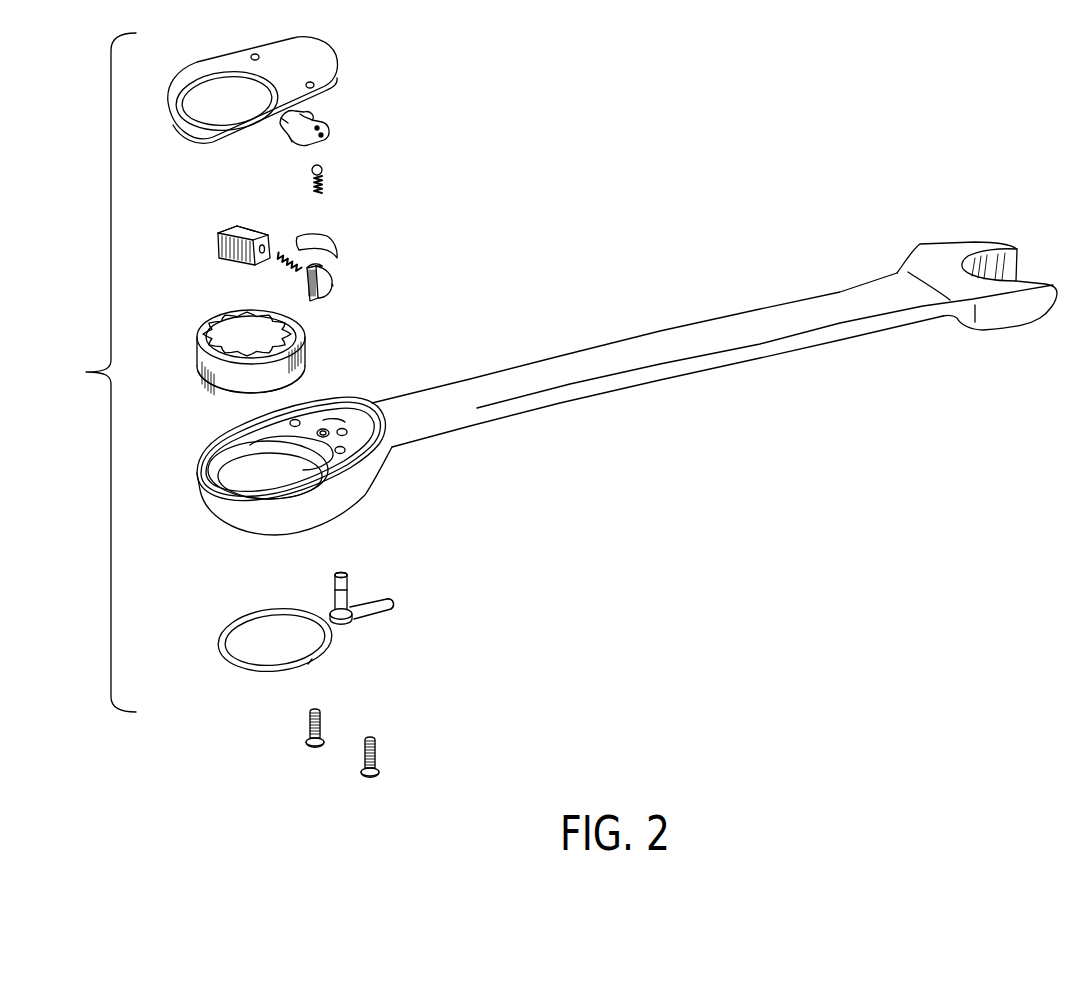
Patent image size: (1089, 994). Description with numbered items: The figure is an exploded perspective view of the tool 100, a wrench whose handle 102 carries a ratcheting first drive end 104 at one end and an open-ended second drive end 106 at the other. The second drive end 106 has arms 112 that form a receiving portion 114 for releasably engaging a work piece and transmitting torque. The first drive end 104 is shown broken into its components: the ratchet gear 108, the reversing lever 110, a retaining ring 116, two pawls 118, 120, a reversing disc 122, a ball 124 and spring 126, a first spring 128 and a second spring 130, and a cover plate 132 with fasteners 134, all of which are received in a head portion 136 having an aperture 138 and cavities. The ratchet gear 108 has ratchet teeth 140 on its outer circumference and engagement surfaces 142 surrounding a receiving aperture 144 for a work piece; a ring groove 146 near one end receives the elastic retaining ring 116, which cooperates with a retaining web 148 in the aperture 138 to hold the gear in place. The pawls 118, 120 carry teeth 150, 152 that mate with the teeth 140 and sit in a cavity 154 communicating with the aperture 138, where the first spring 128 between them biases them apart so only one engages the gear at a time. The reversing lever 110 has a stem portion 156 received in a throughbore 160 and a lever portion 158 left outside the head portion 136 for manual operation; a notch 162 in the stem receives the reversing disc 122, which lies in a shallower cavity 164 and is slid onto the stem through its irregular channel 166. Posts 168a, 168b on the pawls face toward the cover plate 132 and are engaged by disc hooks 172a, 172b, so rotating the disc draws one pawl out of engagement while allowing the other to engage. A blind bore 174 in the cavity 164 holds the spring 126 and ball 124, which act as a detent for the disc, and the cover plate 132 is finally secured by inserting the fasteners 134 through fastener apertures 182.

The tool 100 is at (675, 138).
The handle 102 is at (638, 386).
The first drive end 104 is at (86, 372).
The second drive end 106 is at (916, 244).
The ratchet gear 108 is at (197, 333).
The reversing lever 110 is at (347, 623).
The arms 112 is at (983, 246).
The receiving portion 114 is at (987, 273).
The retaining ring 116 is at (230, 625).
The pawl 118 is at (220, 229).
The pawl 120 is at (332, 285).
The reversing disc 122 is at (330, 128).
The ball 124 is at (322, 167).
The spring 126 is at (325, 183).
The first spring 128 is at (283, 267).
The second spring 130 is at (330, 242).
The cover plate 132 is at (340, 52).
The fasteners 134 is at (317, 748).
The head portion 136 is at (235, 523).
The aperture 138 is at (248, 487).
The ratchet gearing or teeth 140 is at (222, 377).
The engagement surfaces 142 is at (232, 335).
The receiving aperture 144 is at (283, 330).
The ring groove 146 is at (232, 407).
The retaining web 148 is at (217, 485).
The teeth 150 is at (218, 242).
The teeth 152 is at (302, 283).
The cavity 154 is at (307, 467).
The stem portion 156 is at (343, 600).
The lever portion 158 is at (387, 612).
The throughbore 160 is at (329, 437).
The notch 162 is at (348, 583).
The cavity 164 is at (326, 419).
The irregular channel 166 is at (310, 117).
The post 168a is at (253, 228).
The post 168b is at (327, 268).
The disc hook 172a is at (290, 122).
The disc hook 172b is at (290, 143).
The blind bore 174 is at (353, 435).
The fastener apertures 182 is at (296, 420).